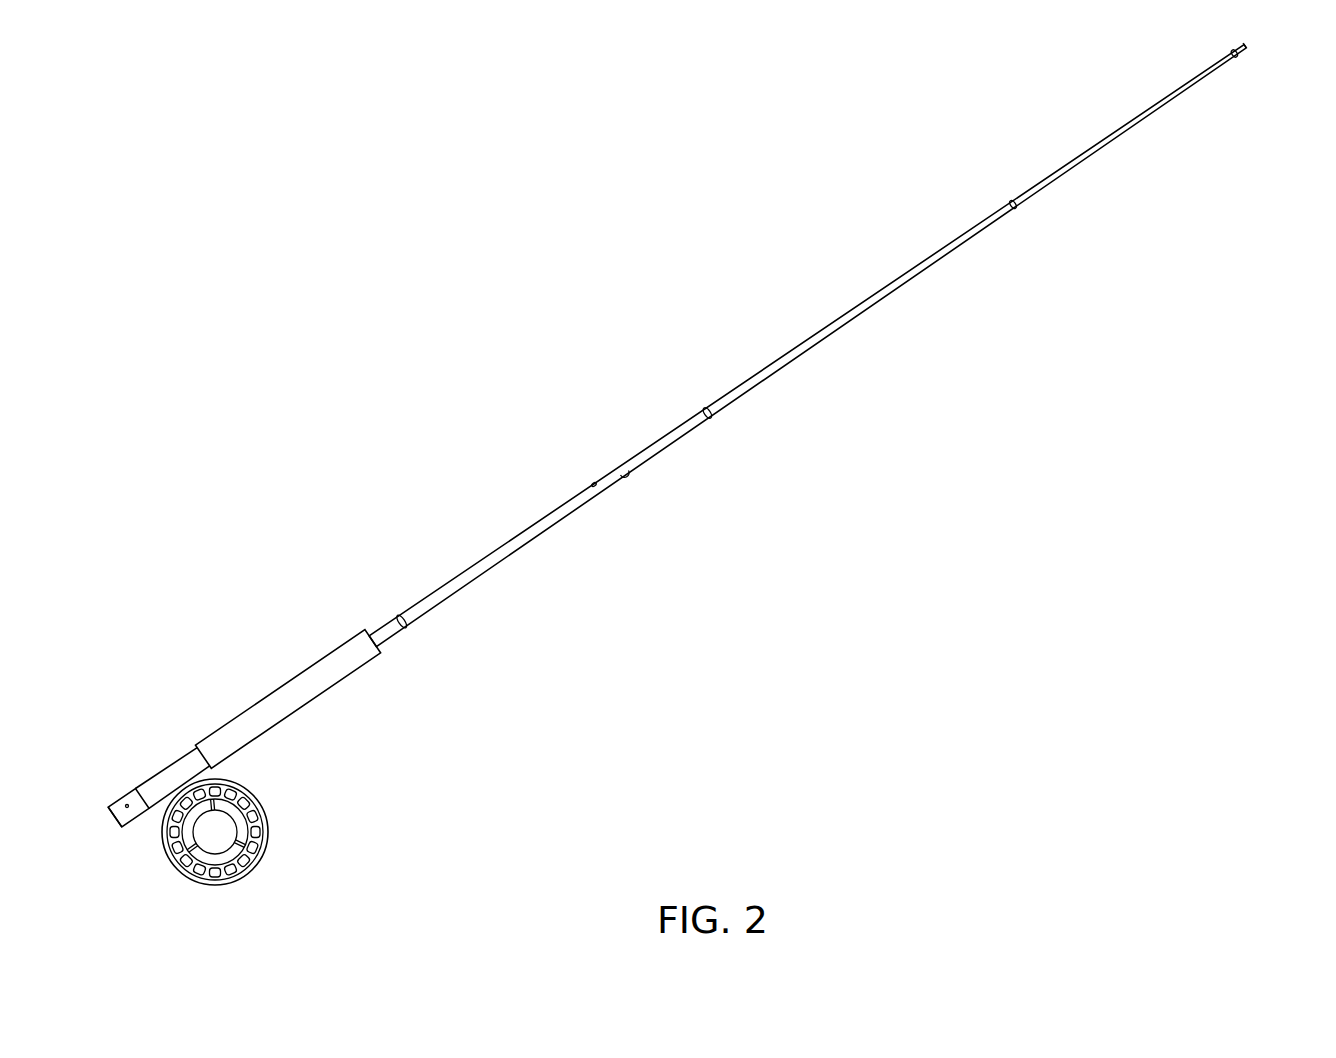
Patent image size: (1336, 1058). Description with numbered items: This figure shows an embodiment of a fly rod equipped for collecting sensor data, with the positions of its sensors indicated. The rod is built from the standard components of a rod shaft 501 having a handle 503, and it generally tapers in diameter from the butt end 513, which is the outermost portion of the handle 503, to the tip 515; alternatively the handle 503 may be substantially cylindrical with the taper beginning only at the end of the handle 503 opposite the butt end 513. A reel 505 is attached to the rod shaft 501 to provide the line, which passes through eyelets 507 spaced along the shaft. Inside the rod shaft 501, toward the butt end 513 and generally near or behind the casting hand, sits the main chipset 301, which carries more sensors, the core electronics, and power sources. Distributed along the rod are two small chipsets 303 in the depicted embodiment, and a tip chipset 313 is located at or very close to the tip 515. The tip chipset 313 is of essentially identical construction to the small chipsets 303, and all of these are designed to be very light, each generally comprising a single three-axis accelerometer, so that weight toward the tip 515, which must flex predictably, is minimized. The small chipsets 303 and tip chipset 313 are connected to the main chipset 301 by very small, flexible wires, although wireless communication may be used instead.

The main chipset 301 is at (124, 805).
The small chipsets 303 is at (401, 618).
The tip chipset 313 is at (1236, 49).
The rod shaft 501 is at (595, 485).
The handle 503 is at (270, 707).
The reel 505 is at (267, 821).
The eyelets 507 is at (625, 478).
The butt end 513 is at (110, 823).
The tip 515 is at (1249, 48).